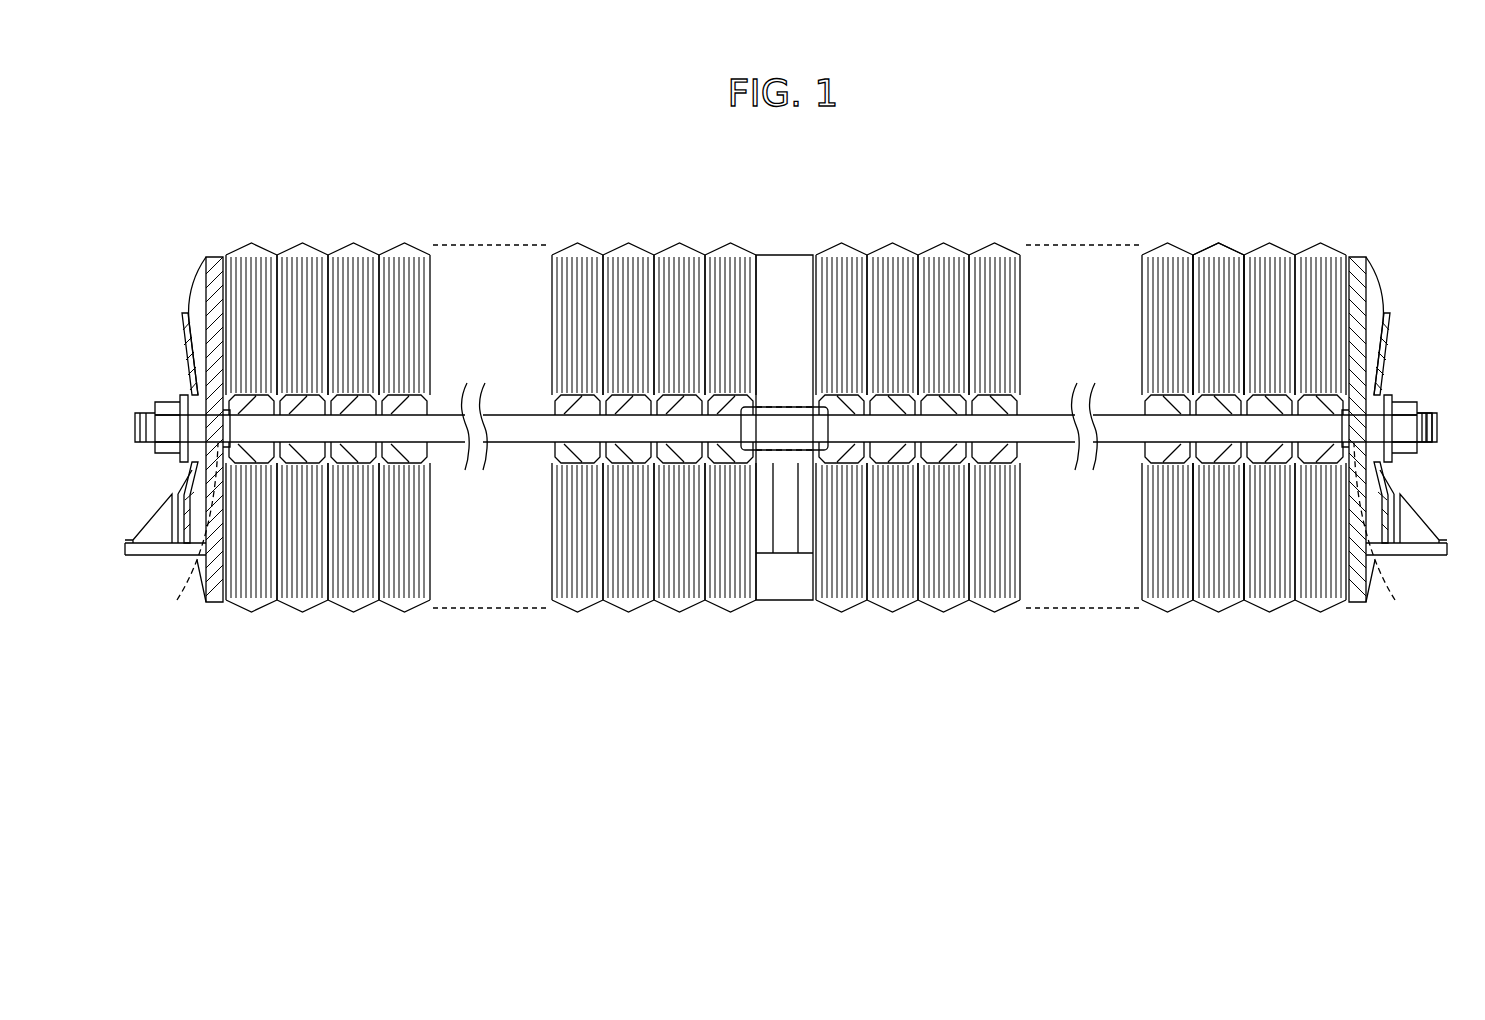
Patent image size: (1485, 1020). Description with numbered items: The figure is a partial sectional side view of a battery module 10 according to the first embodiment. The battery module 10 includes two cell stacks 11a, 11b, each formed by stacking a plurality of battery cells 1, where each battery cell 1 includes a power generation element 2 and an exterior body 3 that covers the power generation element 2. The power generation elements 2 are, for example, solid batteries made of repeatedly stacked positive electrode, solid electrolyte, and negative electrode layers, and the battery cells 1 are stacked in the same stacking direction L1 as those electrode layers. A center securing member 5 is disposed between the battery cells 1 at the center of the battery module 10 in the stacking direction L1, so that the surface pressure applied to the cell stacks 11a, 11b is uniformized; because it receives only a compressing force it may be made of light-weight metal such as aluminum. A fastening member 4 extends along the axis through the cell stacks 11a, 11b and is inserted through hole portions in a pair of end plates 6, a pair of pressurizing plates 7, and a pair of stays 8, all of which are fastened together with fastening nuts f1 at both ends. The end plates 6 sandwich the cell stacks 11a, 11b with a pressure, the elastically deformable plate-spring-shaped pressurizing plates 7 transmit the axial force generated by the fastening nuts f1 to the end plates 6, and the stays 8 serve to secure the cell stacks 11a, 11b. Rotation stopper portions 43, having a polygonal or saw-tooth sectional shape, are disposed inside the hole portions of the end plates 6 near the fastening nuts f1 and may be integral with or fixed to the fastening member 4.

The battery cell 1 is at (1228, 366).
The power generation element 2 is at (1198, 252).
The exterior body 3 is at (1232, 250).
The fastening member 4 is at (518, 428).
The center securing member 5 is at (781, 255).
The end plate 6 is at (1375, 293).
The pressurizing plate 7 is at (1388, 340).
The stay 8 is at (1428, 527).
The battery module 10 is at (1341, 148).
The rotation stopper portion 43 is at (784, 536).
The fastening nut f1 is at (1425, 402).
The cell stack 11a is at (755, 638).
The cell stack 11b is at (815, 638).
The stacking direction L1 is at (921, 748).